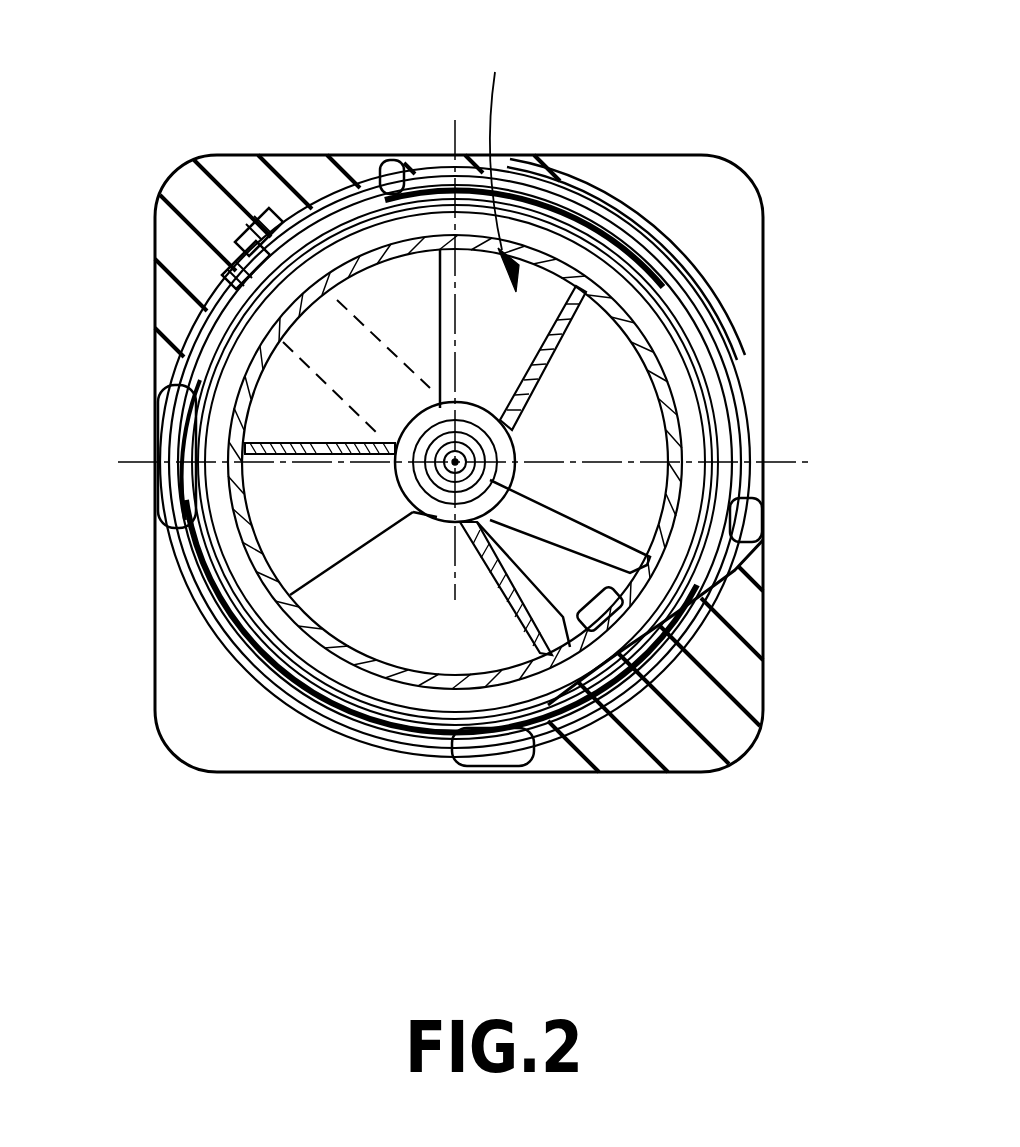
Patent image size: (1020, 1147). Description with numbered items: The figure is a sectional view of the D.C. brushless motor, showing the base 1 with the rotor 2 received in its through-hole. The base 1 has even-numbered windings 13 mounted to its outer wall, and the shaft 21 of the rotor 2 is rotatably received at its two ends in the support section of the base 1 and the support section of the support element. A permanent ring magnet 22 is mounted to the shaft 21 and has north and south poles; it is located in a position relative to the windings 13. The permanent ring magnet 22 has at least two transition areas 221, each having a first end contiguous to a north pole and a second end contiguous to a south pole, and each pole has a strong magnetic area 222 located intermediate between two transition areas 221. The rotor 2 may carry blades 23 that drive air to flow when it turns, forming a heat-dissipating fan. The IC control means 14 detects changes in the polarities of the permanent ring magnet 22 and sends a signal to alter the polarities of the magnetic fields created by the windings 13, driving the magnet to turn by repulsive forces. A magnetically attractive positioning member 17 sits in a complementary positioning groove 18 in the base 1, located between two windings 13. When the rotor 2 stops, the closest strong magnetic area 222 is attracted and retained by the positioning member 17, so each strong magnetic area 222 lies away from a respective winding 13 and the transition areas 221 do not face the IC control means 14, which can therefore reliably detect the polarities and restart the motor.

The base 1 is at (752, 217).
The rotor 2 is at (510, 54).
The windings 13 is at (580, 190).
The IC control means 14 is at (601, 635).
The positioning member 17 is at (245, 218).
The positioning groove 18 is at (245, 218).
The shaft 21 is at (438, 515).
The permanent ring magnet 22 is at (700, 560).
The transition area 221 is at (633, 205).
The strong magnetic area 222 is at (337, 230).
The blades 23 is at (622, 362).